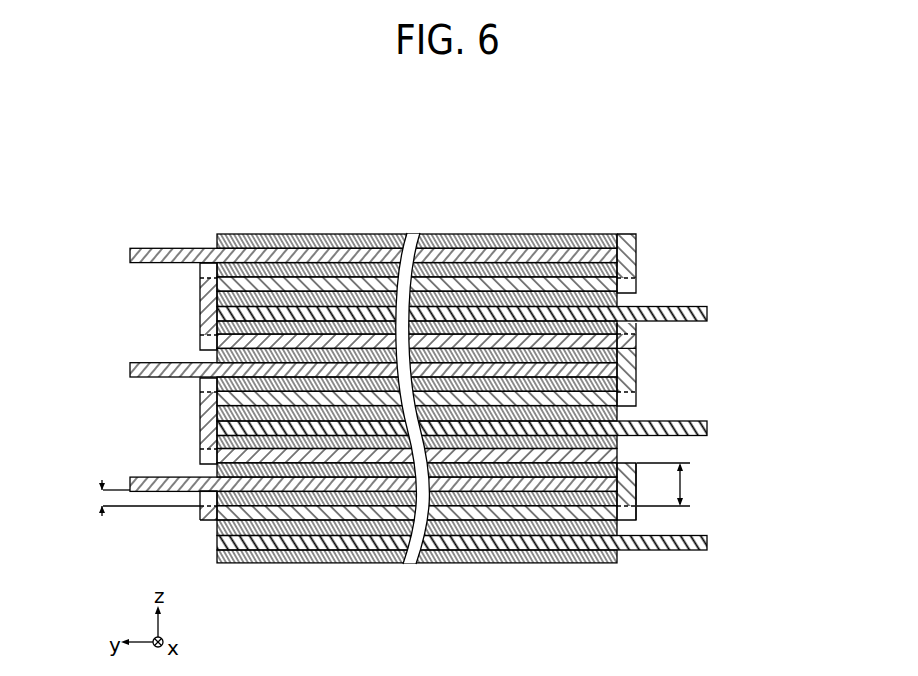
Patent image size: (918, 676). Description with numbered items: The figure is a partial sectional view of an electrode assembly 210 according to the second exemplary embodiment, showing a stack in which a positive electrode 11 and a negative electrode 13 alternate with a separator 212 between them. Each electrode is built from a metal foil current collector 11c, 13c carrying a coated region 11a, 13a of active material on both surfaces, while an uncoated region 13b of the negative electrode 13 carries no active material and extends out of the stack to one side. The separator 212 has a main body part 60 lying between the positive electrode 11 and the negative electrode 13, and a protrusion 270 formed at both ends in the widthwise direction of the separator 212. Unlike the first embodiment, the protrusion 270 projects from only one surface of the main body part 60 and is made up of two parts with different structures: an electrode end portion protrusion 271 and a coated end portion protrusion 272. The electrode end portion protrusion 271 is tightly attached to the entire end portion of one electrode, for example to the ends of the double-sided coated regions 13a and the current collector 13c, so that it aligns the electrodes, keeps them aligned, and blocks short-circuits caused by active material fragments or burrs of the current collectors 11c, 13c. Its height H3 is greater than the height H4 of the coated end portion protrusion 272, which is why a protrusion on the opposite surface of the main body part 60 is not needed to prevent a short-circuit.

The electrode assembly 210 is at (443, 148).
The positive electrode 11 is at (714, 543).
The coated region 11a is at (295, 528).
The current collector 11c is at (373, 547).
The negative electrode 13 is at (125, 472).
The coated region 13a is at (585, 470).
The uncoated region 13b is at (160, 477).
The current collector 13c is at (498, 490).
The main body part 60 is at (450, 513).
The protrusion 270 is at (754, 217).
The electrode end portion protrusion 271 is at (628, 483).
The coated end portion protrusion 272 is at (139, 549).
The separator 212 is at (644, 518).
The height of electrode end portion protrusion H3 is at (673, 484).
The height of coated end portion protrusion H4 is at (136, 498).